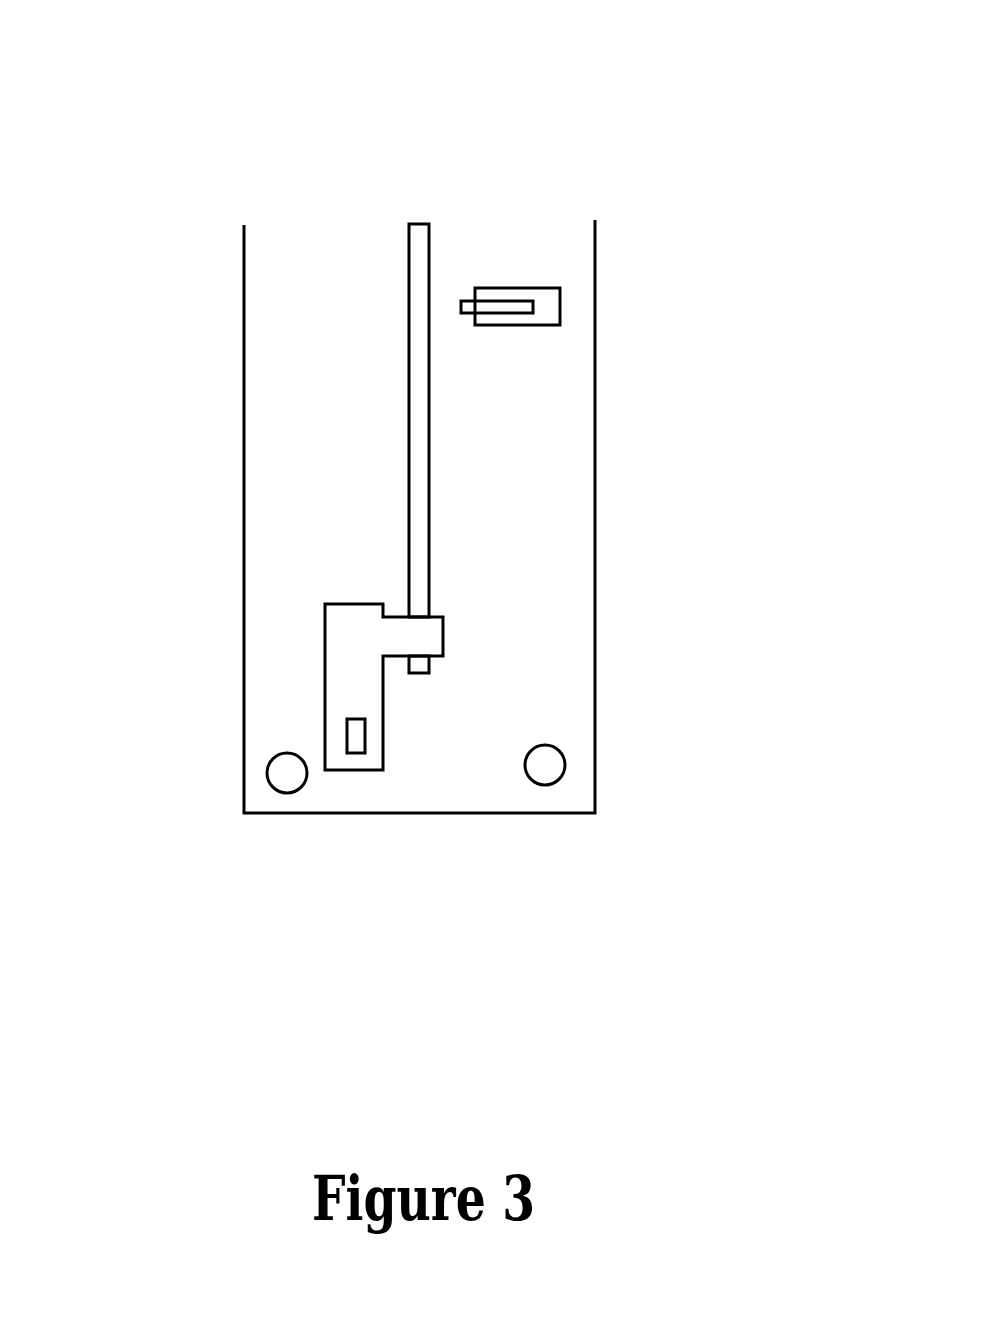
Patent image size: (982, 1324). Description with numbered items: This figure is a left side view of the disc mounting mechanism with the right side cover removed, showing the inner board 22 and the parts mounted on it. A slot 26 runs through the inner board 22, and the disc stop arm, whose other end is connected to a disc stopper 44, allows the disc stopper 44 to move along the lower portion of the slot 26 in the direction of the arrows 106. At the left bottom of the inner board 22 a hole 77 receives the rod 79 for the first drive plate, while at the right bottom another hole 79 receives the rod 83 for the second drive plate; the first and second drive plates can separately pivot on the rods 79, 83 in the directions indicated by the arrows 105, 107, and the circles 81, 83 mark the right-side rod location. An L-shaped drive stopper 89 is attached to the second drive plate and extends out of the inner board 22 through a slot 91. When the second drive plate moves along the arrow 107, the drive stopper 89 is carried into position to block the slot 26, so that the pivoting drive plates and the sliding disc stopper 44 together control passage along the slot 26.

The inner board 22 is at (228, 400).
The slot 26 is at (460, 532).
The disc stopper 44 is at (463, 638).
The hole 77 is at (202, 890).
The rod 79 is at (272, 798).
The guide post 81 is at (673, 858).
The rod 83 is at (563, 772).
The drive stopper 89 is at (631, 227).
The slot 91 is at (516, 265).
The direction of pivoting 105 is at (207, 455).
The arrows 106 is at (305, 662).
The direction of pivoting 107 is at (725, 452).